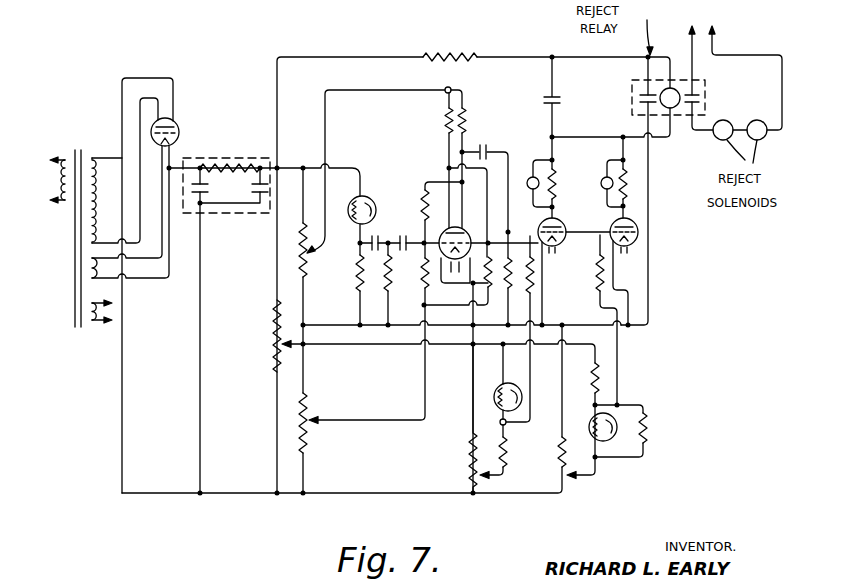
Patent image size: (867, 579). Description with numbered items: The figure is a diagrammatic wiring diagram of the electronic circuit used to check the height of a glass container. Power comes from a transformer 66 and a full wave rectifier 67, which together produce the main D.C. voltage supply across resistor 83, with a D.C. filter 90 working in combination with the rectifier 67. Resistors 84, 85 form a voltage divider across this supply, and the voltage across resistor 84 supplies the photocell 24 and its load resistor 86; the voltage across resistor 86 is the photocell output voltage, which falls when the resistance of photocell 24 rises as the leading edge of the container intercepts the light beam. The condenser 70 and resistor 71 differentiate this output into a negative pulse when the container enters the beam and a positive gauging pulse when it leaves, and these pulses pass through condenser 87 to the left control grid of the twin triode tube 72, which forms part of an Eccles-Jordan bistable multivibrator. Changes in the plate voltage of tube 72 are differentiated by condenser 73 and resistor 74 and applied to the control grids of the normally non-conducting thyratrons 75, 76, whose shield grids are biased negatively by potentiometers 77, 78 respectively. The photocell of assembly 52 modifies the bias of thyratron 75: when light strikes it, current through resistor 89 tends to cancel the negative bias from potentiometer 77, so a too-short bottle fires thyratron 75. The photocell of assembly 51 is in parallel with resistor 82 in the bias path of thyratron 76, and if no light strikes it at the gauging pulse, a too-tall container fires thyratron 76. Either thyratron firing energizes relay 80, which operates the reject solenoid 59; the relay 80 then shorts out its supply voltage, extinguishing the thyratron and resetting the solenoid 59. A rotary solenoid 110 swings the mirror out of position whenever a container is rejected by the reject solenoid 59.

The transformer 66 is at (72, 137).
The full wave rectifier 67 is at (181, 124).
The D.C. filter 90 is at (214, 160).
The photocell 24 is at (363, 195).
The condenser 70 is at (383, 223).
The condenser 73 is at (488, 145).
The twin triode vacuum tube 72 is at (462, 227).
The thyratron 75 is at (560, 222).
The thyratron 76 is at (634, 222).
The resistor 84 is at (308, 262).
The load resistor 86 is at (356, 282).
The resistor 71 is at (384, 272).
The condenser 87 is at (403, 252).
The resistor 74 is at (506, 293).
The resistor 83 is at (274, 352).
The resistor 85 is at (312, 436).
The photocell of assembly 52 is at (510, 382).
The resistor 89 is at (505, 454).
The potentiometer 77 is at (472, 460).
The potentiometer 78 is at (558, 463).
The photocell of assembly 51 is at (606, 438).
The resistor 82 is at (651, 427).
The relay 80 is at (678, 108).
The reject solenoid 59 is at (765, 120).
The rotary solenoid 110 is at (780, 101).